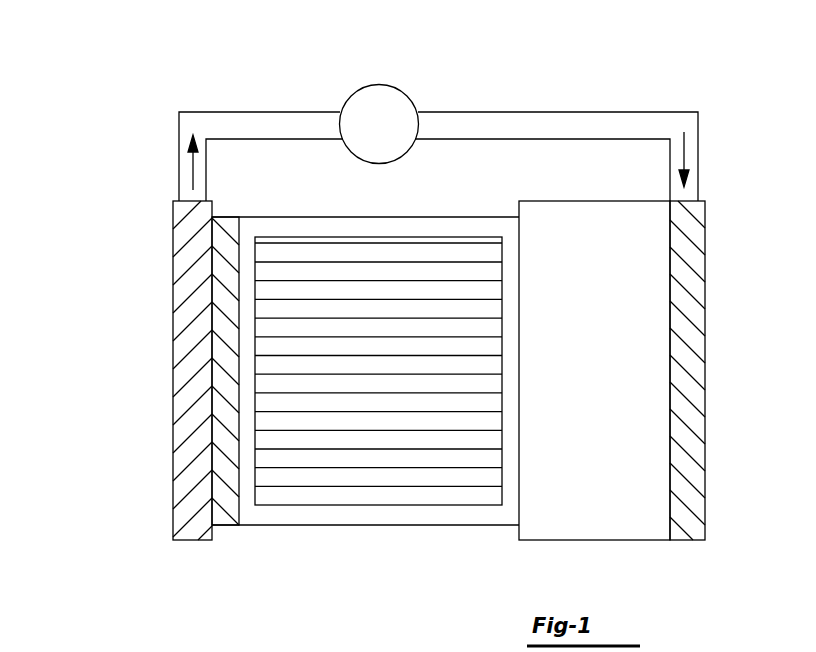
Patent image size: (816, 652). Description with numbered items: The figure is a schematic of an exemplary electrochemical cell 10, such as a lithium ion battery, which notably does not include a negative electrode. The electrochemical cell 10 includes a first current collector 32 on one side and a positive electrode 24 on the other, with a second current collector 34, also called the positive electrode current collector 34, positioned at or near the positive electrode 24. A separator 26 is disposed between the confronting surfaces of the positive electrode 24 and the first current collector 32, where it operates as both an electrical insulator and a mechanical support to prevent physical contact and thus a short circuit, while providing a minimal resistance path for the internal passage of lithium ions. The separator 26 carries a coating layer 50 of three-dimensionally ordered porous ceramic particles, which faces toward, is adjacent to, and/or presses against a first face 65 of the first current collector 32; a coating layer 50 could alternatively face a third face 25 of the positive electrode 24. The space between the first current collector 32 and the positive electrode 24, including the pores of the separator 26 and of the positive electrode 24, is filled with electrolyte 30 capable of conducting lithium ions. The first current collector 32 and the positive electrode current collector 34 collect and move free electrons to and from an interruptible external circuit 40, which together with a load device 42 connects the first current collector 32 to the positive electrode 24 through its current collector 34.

The electrochemical cell 10 is at (108, 63).
The positive electrode 24 is at (602, 375).
The third face 25 is at (518, 500).
The separator 26 is at (360, 523).
The electrolyte 30 is at (376, 367).
The first current collector 32 is at (173, 280).
The second current collector 34 is at (705, 302).
The external circuit 40 is at (238, 112).
The load device 42 is at (390, 142).
The coating layer 50 is at (226, 493).
The first face 65 is at (220, 377).